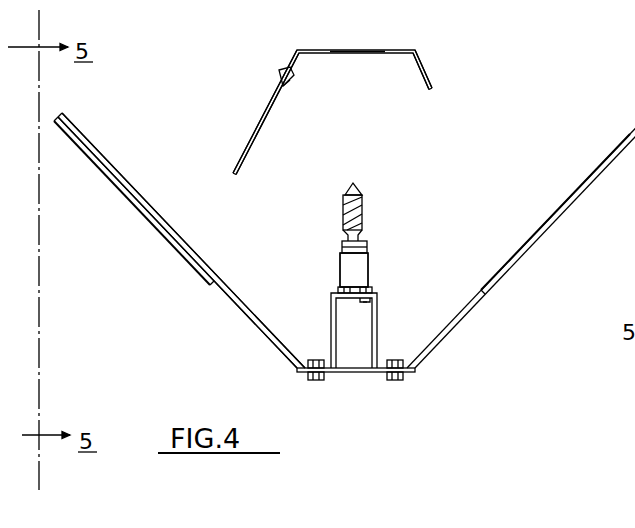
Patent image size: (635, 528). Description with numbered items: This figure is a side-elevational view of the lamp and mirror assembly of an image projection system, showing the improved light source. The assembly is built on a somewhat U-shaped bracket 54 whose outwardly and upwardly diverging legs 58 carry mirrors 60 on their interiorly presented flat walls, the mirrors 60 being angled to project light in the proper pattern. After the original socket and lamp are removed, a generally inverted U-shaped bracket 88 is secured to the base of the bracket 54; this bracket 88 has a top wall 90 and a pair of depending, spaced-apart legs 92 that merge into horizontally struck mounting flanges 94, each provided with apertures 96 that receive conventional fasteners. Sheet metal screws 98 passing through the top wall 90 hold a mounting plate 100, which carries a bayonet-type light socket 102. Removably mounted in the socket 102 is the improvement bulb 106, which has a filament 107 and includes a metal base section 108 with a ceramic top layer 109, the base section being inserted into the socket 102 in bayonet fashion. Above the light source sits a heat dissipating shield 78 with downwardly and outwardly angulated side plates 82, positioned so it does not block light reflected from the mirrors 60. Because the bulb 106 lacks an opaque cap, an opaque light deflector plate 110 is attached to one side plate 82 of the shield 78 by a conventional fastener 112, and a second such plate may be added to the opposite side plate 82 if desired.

The bracket 54 is at (133, 217).
The legs 58 is at (187, 262).
The mirrors 60 is at (112, 160).
The heat dissipating shield 78 is at (392, 46).
The side plates 82 is at (432, 68).
The bracket 88 is at (327, 328).
The top wall 90 is at (370, 300).
The legs 92 is at (330, 304).
The mounting flanges 94 is at (300, 373).
The apertures 96 is at (316, 381).
The sheet metal screws 98 is at (372, 290).
The mounting plate 100 is at (344, 289).
The light socket 102 is at (370, 272).
The bulb 106 is at (345, 205).
The filament 107 is at (364, 213).
The metal base section 108 is at (368, 250).
The ceramic top layer 109 is at (348, 243).
The light deflector plate 110 is at (262, 122).
The fastener 112 is at (280, 70).